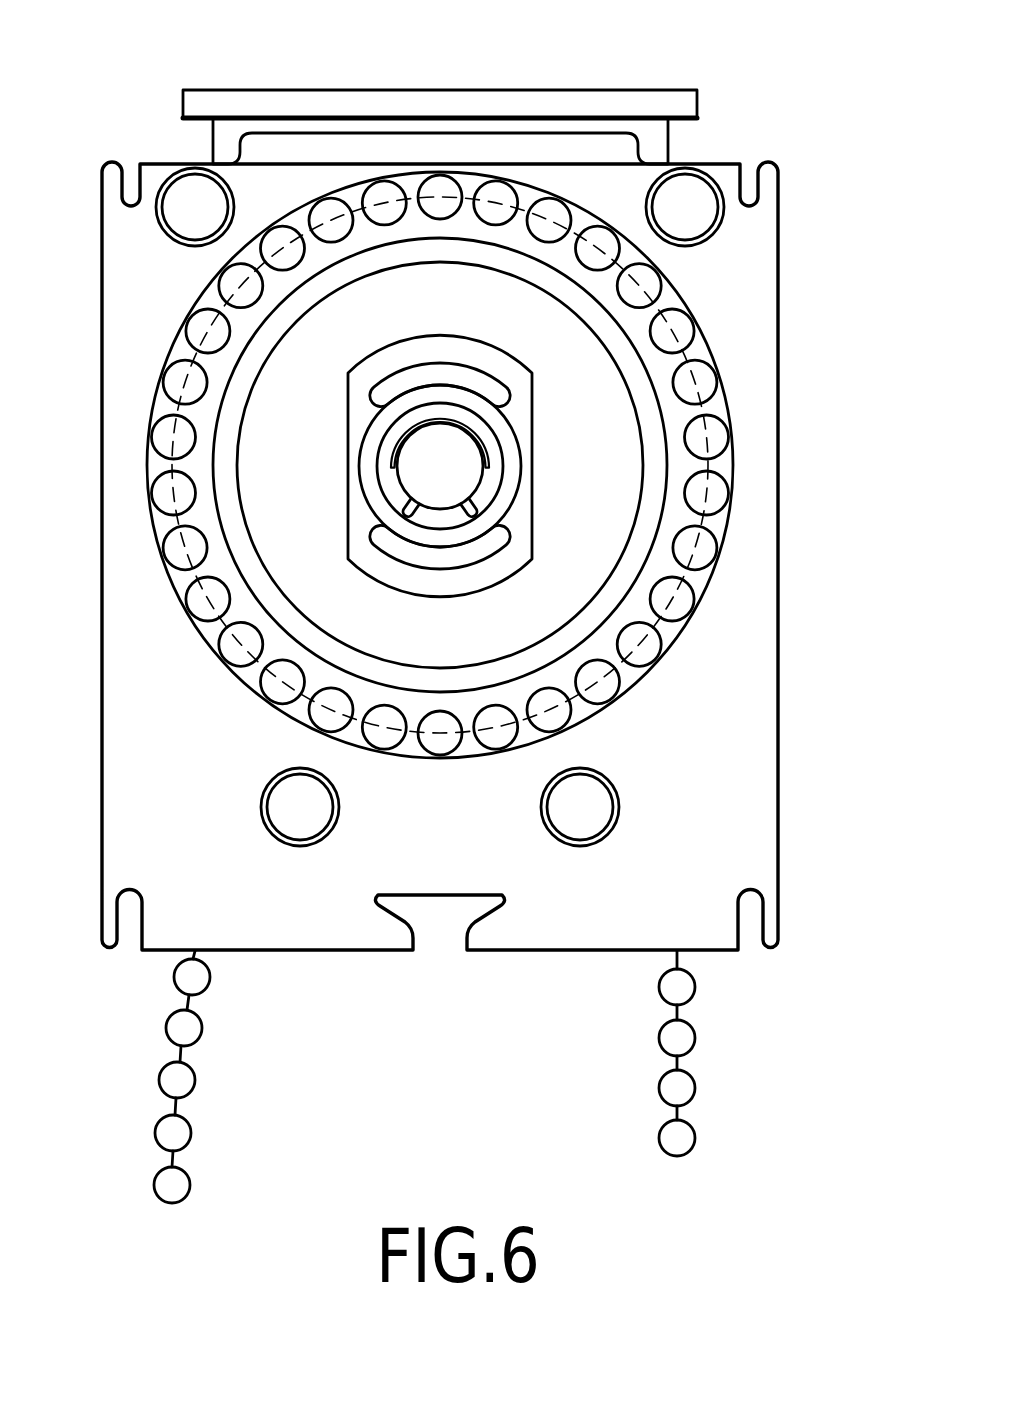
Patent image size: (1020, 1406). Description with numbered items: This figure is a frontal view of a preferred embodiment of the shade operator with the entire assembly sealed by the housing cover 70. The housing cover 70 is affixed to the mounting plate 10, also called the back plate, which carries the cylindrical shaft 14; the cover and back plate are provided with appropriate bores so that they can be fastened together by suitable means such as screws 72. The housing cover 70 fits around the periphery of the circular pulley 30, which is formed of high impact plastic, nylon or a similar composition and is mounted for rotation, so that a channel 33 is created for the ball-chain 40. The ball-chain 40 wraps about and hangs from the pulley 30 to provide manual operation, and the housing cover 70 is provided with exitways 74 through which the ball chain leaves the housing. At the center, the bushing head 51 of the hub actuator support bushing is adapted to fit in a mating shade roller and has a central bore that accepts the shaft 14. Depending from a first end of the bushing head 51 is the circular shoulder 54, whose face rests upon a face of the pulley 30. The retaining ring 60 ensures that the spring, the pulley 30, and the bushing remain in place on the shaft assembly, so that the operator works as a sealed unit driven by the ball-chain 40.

The mounting plate 10 is at (658, 82).
The cylindrical shaft 14 is at (468, 477).
The circular pulley 30 is at (196, 412).
The channel 33 is at (390, 192).
The ball-chain 40 is at (153, 1132).
The bushing head 51 is at (534, 378).
The circular shoulder 54 is at (268, 527).
The retaining ring 60 is at (390, 442).
The housing cover 70 is at (790, 808).
The screws 72 is at (178, 193).
The exitways 74 is at (212, 955).